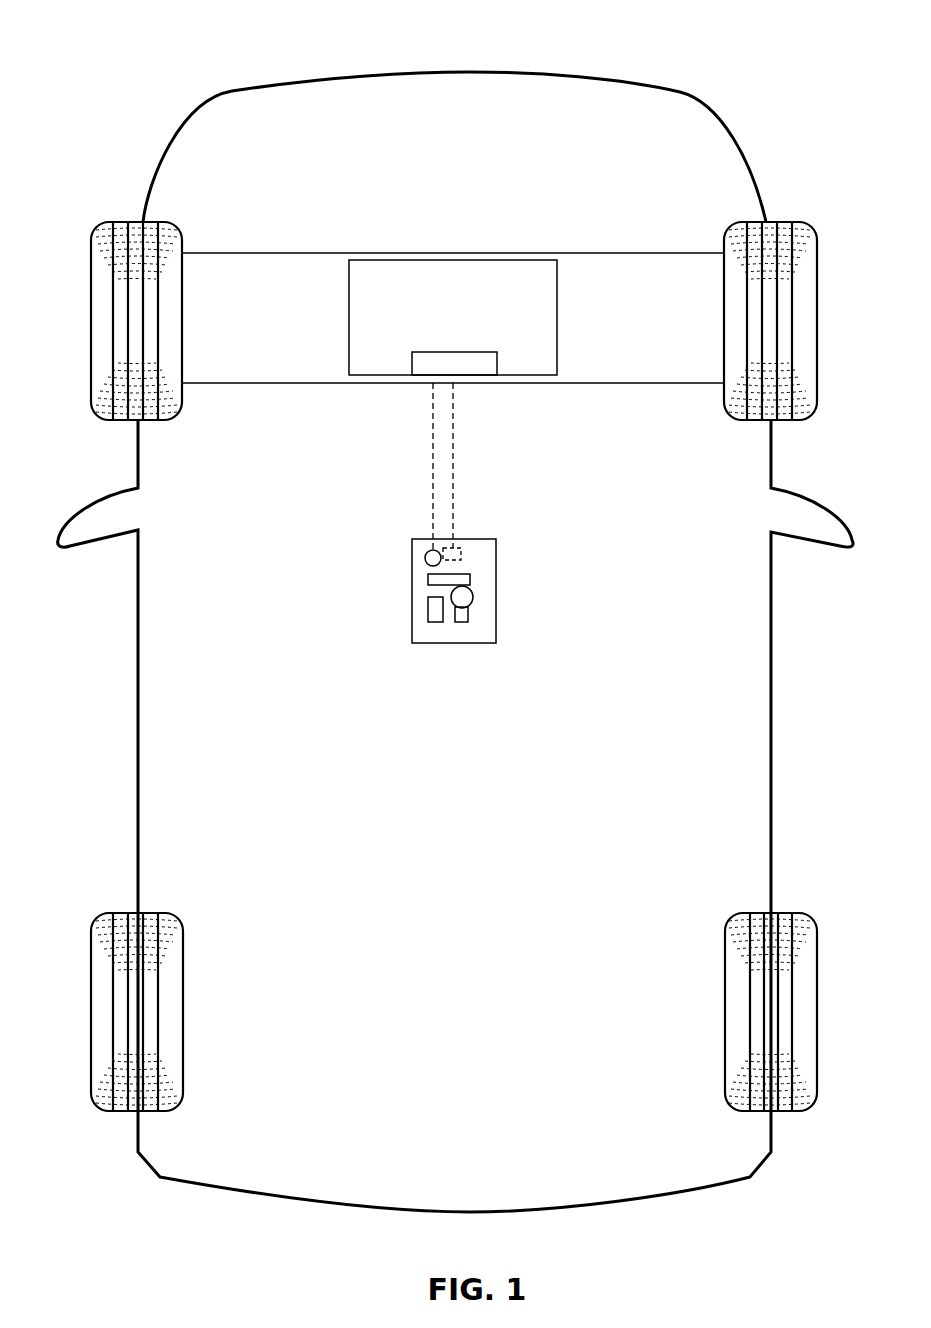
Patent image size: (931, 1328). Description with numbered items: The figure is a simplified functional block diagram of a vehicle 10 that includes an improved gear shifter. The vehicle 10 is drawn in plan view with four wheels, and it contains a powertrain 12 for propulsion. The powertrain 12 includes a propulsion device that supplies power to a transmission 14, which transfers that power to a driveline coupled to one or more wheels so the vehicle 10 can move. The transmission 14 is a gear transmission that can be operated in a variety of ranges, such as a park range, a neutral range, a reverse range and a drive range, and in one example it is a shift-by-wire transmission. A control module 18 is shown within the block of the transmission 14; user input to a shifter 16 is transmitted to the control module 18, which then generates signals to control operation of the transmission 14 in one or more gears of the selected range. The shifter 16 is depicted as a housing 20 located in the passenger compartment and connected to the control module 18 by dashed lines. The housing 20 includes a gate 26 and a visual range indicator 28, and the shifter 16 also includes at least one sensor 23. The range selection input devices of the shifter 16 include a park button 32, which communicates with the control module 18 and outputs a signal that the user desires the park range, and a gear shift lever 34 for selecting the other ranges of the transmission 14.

The vehicle 10 is at (104, 54).
The powertrain 12 is at (619, 219).
The transmission 14 is at (349, 318).
The shifter 16 is at (499, 609).
The control module 18 is at (453, 352).
The housing 20 is at (457, 645).
The sensor 23 is at (466, 538).
The gate 26 is at (468, 579).
The visual range indicator 28 is at (428, 605).
The park button 32 is at (425, 558).
The gear shift lever 34 is at (475, 597).